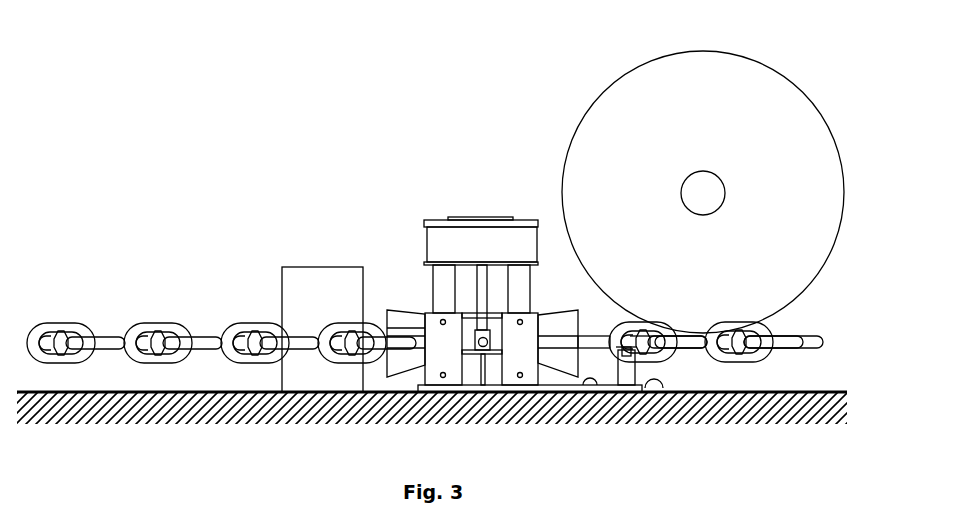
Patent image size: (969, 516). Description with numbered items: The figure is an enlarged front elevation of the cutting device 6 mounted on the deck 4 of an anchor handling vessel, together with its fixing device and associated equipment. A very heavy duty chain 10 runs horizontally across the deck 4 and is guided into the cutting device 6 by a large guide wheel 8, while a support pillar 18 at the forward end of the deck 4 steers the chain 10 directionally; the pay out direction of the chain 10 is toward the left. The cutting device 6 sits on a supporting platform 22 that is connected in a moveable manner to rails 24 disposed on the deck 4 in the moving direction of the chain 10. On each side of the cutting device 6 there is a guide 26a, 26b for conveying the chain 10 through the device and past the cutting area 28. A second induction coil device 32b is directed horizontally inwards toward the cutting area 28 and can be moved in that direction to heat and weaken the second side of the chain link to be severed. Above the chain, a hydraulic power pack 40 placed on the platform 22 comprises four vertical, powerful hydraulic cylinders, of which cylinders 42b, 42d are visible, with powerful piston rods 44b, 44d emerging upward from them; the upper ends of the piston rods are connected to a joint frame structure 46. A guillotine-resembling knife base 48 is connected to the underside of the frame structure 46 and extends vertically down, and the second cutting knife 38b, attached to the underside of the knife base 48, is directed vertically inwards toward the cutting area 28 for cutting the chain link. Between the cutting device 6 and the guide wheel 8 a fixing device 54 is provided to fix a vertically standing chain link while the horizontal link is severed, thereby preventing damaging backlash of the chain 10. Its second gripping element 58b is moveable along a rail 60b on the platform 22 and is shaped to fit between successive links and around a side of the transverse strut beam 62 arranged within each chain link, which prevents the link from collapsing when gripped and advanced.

The deck 4 is at (812, 390).
The cutting device 6 is at (478, 198).
The guide wheel 8 is at (722, 80).
The chain 10 is at (68, 327).
The support pillar 18 is at (302, 278).
The supporting platform 22 is at (598, 384).
The rails 24 is at (668, 392).
The first guide 26a is at (403, 317).
The second guide 26b is at (553, 323).
The cutting area 28 is at (471, 378).
The second induction coil device 32b is at (475, 342).
The second cutting knife 38b is at (494, 404).
The hydraulic power pack 40 is at (392, 234).
The hydraulic cylinder 42b is at (432, 340).
The hydraulic cylinder 42d is at (530, 372).
The piston rod 44b is at (440, 283).
The piston rod 44d is at (523, 275).
The frame structure 46 is at (497, 243).
The knife base 48 is at (480, 297).
The fixing device 54 is at (621, 312).
The second gripping element 58b is at (657, 338).
The rail 60b is at (637, 366).
The strut beam 62 is at (642, 335).